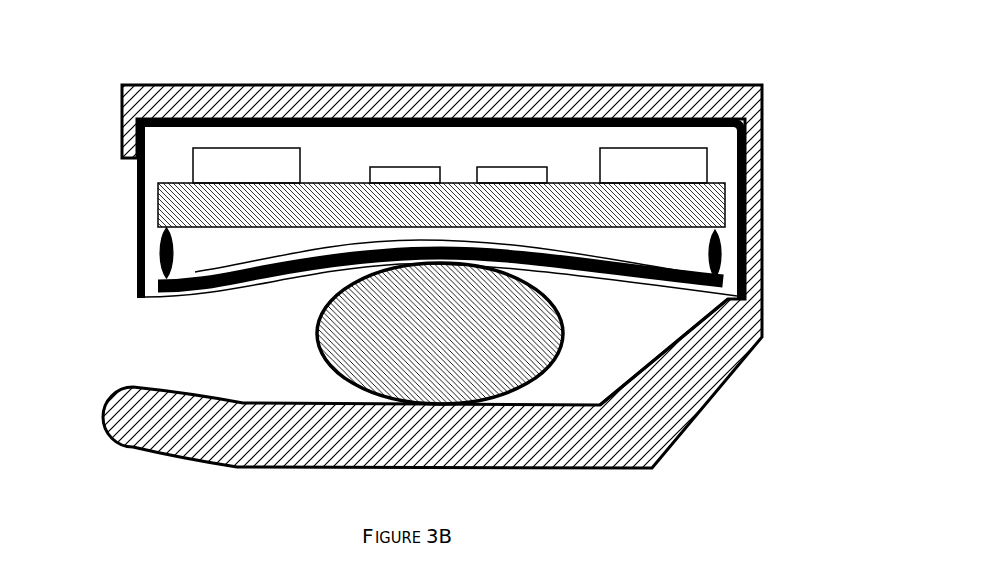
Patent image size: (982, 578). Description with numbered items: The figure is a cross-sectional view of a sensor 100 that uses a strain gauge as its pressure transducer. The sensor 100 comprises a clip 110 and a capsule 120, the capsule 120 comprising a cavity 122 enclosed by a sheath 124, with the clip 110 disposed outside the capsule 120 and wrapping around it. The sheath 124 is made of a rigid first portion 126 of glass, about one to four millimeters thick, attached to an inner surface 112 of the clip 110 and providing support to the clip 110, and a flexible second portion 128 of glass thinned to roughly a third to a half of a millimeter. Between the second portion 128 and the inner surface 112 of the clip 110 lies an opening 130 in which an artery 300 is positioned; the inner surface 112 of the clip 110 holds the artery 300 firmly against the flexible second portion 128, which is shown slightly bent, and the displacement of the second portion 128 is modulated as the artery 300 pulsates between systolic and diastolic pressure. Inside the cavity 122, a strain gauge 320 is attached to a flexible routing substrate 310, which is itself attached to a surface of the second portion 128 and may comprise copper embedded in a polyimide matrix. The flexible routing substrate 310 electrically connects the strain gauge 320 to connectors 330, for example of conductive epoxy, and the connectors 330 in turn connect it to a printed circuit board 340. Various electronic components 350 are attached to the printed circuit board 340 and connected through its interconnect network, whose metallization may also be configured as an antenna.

The sensor 100 is at (777, 75).
The clip 110 is at (330, 115).
The inner surface 112 is at (677, 341).
The capsule 120 is at (125, 213).
The cavity 122 is at (582, 142).
The sheath 124 is at (100, 306).
The first portion 126 is at (137, 284).
The second portion 128 is at (175, 297).
The opening 130 is at (252, 385).
The artery 300 is at (320, 338).
The flexible routing substrate 310 is at (227, 287).
The strain gauge 320 is at (263, 262).
The connectors 330 is at (707, 265).
The printed circuit board 340 is at (330, 219).
The electronic components 350 is at (672, 177).